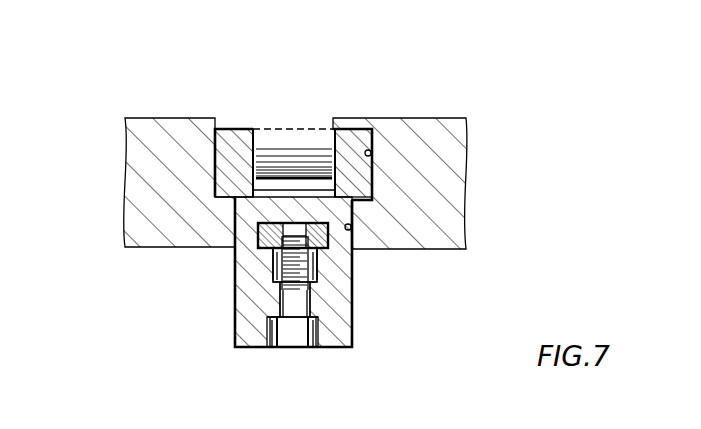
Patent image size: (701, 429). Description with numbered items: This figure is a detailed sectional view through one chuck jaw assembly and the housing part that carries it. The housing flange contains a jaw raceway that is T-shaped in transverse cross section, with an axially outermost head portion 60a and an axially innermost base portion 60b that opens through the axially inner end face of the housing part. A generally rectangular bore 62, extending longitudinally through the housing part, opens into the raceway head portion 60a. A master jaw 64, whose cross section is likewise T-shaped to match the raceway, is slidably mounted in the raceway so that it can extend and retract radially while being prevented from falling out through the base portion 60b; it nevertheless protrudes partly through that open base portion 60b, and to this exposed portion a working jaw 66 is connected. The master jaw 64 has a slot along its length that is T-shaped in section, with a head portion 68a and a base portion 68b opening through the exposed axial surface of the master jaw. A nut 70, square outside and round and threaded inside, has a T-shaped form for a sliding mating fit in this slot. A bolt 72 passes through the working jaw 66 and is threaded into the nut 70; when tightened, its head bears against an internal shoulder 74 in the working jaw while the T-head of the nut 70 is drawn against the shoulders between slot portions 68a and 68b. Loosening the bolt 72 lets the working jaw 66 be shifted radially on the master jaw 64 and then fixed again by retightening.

The head portion of raceway 60a is at (371, 153).
The base portion of raceway 60b is at (353, 233).
The bore 62 is at (332, 124).
The master jaw 64 is at (233, 141).
The working jaw 66 is at (340, 333).
The head portion of slot 68a is at (260, 223).
The base portion of slot 68b is at (270, 268).
The nut 70 is at (319, 272).
The bolt 72 is at (297, 337).
The internal shoulder 74 is at (275, 327).